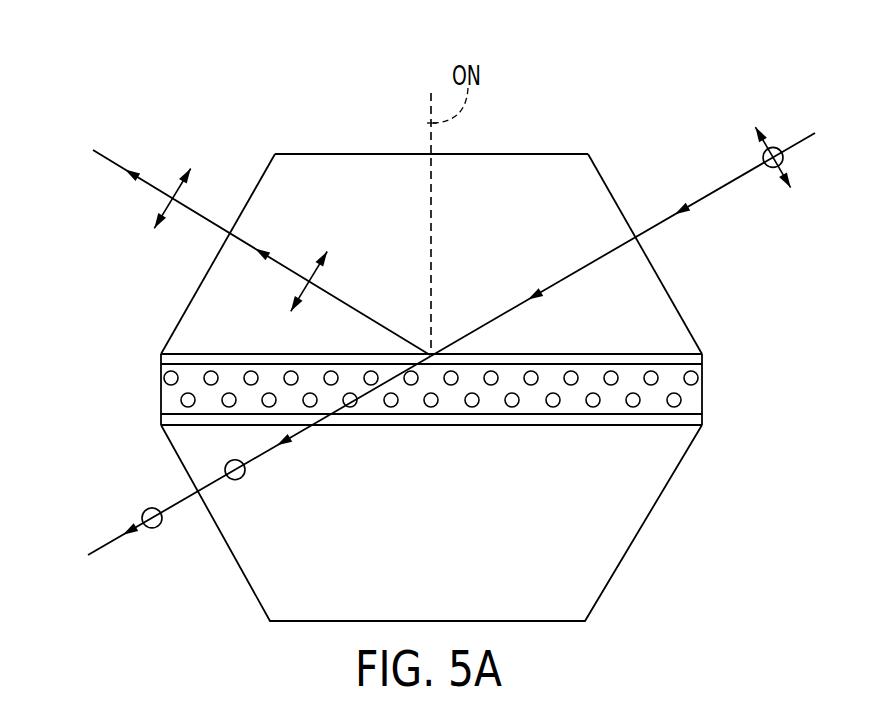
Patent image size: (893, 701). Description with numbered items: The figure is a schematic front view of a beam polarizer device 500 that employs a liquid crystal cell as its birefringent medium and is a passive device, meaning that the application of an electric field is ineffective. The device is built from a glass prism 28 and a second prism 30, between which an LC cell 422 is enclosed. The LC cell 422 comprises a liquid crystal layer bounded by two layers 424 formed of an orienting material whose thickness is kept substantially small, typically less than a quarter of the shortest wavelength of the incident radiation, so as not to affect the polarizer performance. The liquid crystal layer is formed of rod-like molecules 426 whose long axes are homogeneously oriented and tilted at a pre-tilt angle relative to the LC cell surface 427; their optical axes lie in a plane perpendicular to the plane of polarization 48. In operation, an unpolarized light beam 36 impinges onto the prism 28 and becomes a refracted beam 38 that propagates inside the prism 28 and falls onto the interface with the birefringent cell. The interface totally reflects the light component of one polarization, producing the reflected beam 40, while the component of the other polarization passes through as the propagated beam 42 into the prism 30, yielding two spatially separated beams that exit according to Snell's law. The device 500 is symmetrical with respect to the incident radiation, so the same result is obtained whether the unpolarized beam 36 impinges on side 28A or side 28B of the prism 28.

The beam polarizer device 500 is at (213, 105).
The prism 28 is at (527, 165).
The side of the prism 28A is at (615, 195).
The side of the prism 28B is at (205, 273).
The prism 30 is at (613, 540).
The plane of polarization 48 is at (727, 88).
The LC cell 422 is at (647, 290).
The orienting layers 424 is at (652, 354).
The rod-like molecules 426 is at (163, 377).
The LC cell surface 427 is at (283, 352).
The unpolarized light beam 36 is at (708, 198).
The refracted beam 38 is at (560, 282).
The reflected beam 40 is at (277, 260).
The propagated beam 42 is at (253, 460).